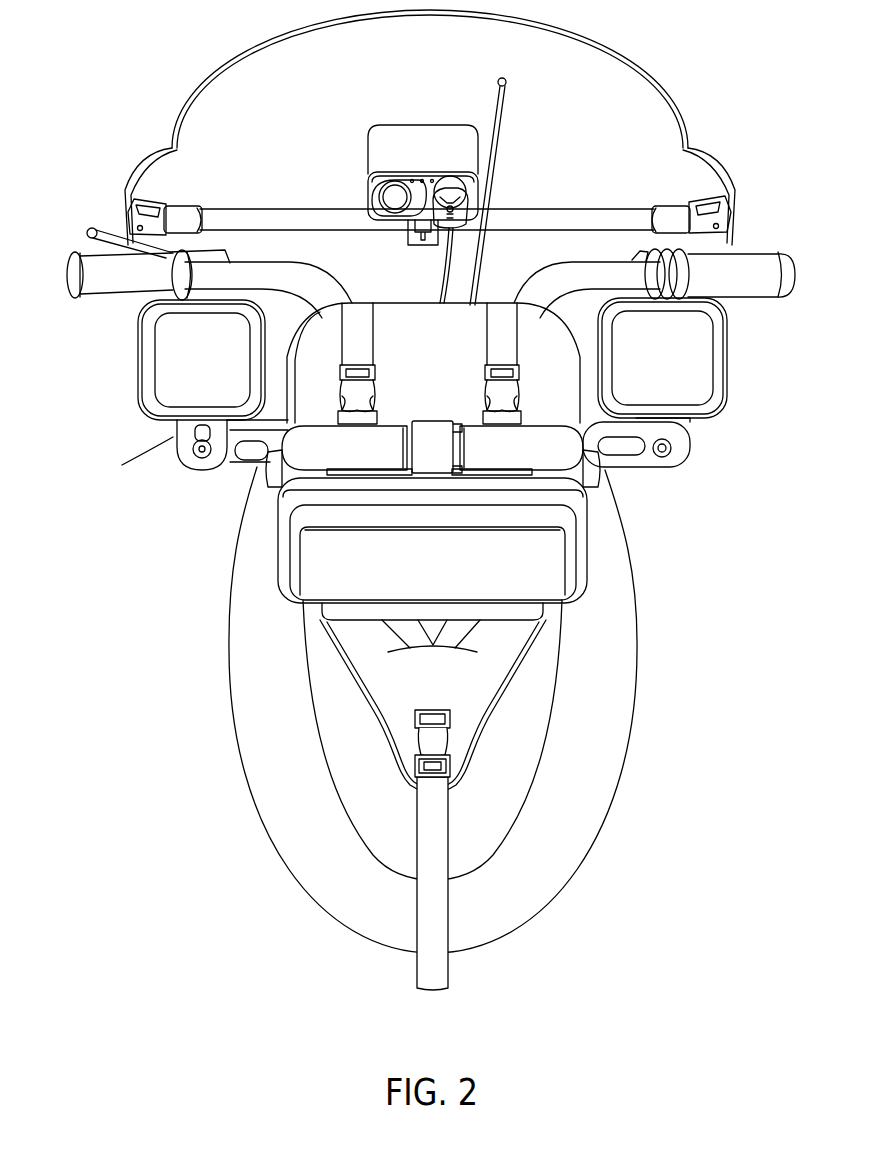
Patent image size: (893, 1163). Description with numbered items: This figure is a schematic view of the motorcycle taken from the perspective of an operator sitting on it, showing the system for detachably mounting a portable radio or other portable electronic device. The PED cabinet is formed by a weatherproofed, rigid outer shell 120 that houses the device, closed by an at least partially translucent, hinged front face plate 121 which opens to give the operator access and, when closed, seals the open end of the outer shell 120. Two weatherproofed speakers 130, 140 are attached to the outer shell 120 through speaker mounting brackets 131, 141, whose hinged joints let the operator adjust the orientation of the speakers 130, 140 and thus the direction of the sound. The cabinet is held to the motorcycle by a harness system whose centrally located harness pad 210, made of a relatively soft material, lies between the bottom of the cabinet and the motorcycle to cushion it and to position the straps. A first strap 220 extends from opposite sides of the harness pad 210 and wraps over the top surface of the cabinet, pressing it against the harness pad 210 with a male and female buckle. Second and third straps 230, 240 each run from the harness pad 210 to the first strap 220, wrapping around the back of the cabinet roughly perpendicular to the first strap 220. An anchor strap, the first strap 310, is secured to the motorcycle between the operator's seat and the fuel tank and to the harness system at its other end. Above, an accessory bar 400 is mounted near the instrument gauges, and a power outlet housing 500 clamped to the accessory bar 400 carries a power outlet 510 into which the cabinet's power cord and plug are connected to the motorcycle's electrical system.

The outer shell 120 is at (436, 338).
The front face plate 121 is at (577, 603).
The speaker 130 is at (133, 340).
The speaker mounting bracket 131 is at (175, 438).
The speaker 140 is at (728, 340).
The speaker mounting bracket 141 is at (690, 447).
The harness pad 210 is at (358, 692).
The first strap 220 is at (327, 422).
The second strap 230 is at (372, 340).
The third strap 240 is at (518, 332).
The first strap 310 is at (417, 813).
The accessory bar 400 is at (291, 208).
The power outlet housing 500 is at (398, 157).
The power outlet 510 is at (378, 197).